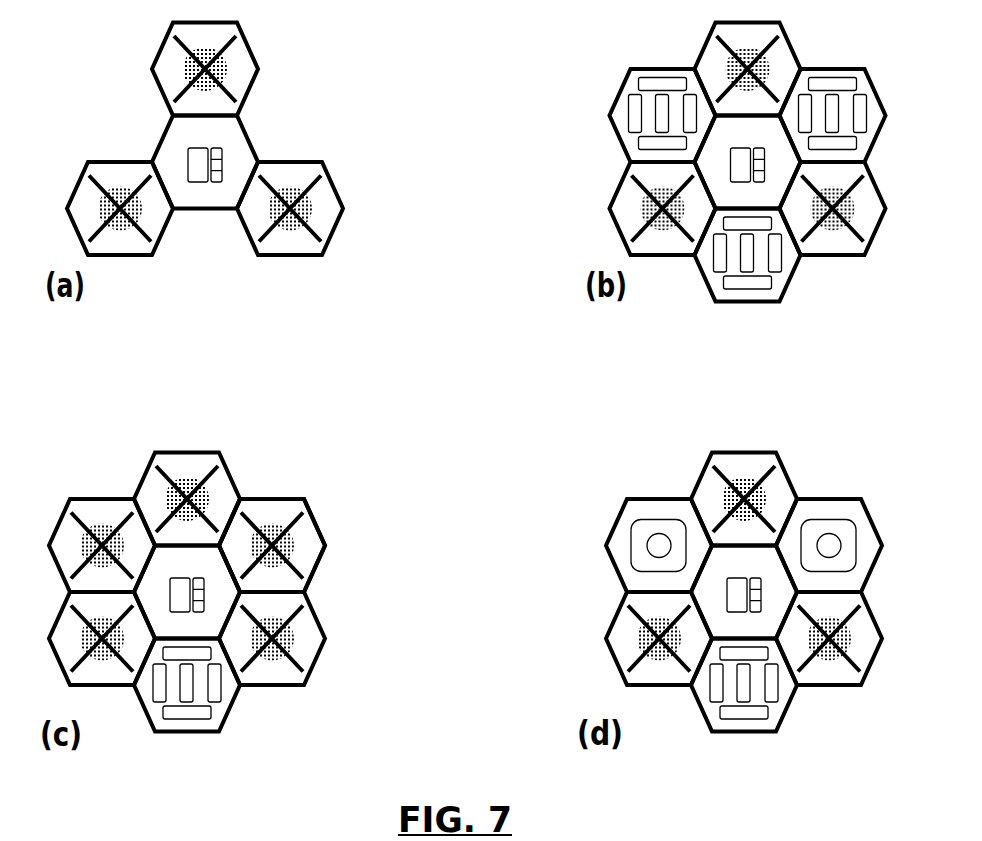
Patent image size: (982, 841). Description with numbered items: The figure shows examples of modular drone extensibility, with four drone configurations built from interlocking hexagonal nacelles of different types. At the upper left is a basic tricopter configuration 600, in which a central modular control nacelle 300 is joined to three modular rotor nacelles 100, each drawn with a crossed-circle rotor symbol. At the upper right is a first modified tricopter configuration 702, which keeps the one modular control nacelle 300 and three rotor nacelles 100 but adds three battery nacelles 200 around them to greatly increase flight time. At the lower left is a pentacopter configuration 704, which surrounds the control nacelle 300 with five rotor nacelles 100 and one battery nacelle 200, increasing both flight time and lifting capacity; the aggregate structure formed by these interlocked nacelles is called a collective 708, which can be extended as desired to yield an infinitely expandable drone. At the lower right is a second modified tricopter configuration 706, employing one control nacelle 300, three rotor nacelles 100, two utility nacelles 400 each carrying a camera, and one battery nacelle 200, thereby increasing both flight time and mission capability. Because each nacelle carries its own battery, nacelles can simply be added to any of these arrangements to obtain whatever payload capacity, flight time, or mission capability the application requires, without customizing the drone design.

The modular rotor nacelle 100 is at (318, 213).
The battery nacelle 200 is at (750, 290).
The modular control nacelle 300 is at (243, 150).
The utility nacelle 400 is at (608, 547).
The tricopter configuration 600 is at (272, 98).
The first modified tricopter configuration 702 is at (605, 98).
The pentacopter configuration 704 is at (98, 468).
The second modified tricopter configuration 706 is at (637, 477).
The collective 708 is at (255, 477).